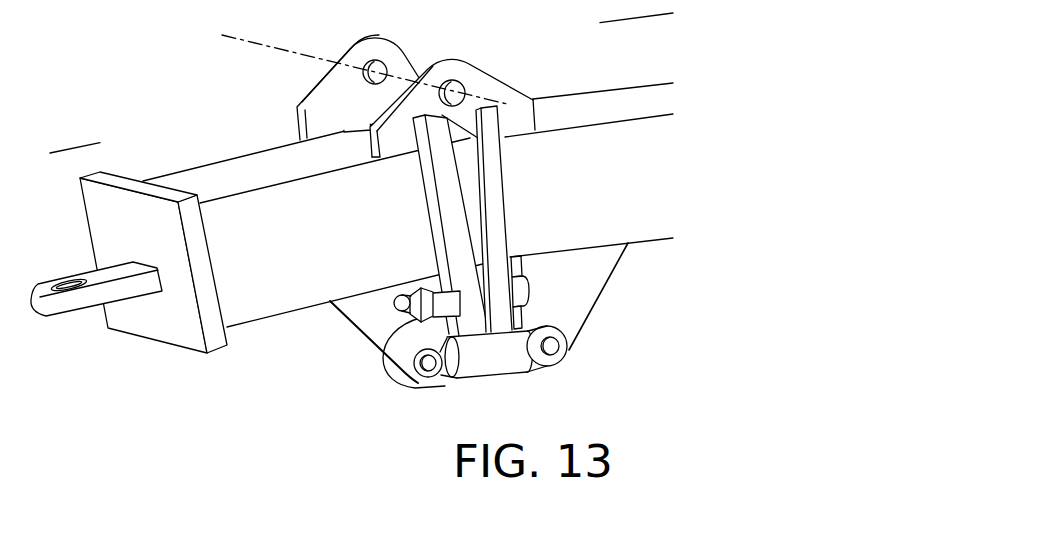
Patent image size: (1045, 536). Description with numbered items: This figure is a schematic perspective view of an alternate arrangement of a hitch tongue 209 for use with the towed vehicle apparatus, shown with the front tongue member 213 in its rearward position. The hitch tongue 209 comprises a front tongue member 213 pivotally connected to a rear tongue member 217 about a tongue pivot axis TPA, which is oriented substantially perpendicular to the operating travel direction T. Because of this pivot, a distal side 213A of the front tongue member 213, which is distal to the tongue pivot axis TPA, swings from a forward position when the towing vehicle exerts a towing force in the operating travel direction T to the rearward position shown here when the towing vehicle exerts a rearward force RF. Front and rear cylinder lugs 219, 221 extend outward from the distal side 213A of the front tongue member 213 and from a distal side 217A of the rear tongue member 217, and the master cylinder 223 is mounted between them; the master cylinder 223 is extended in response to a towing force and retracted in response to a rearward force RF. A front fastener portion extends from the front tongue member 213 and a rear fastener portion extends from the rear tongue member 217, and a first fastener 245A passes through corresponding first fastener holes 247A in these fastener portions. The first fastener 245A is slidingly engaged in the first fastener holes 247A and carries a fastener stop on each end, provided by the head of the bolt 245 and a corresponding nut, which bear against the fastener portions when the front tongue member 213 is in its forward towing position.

The hitch tongue 209 is at (646, 294).
The front tongue member 213 is at (205, 165).
The distal side of the front tongue member 213A is at (384, 288).
The rear tongue member 217 is at (631, 87).
The distal side of the rear tongue member 217A is at (598, 250).
The front cylinder lug 219 is at (366, 340).
The rear cylinder lug 221 is at (583, 330).
The master cylinder 223 is at (491, 380).
The bolt 245 is at (403, 352).
The first fastener 245A is at (403, 352).
The first fastener holes 247A is at (405, 375).
The tongue pivot axis TPA is at (263, 45).
The operating travel direction T is at (597, 23).
The rearward force RF is at (105, 142).